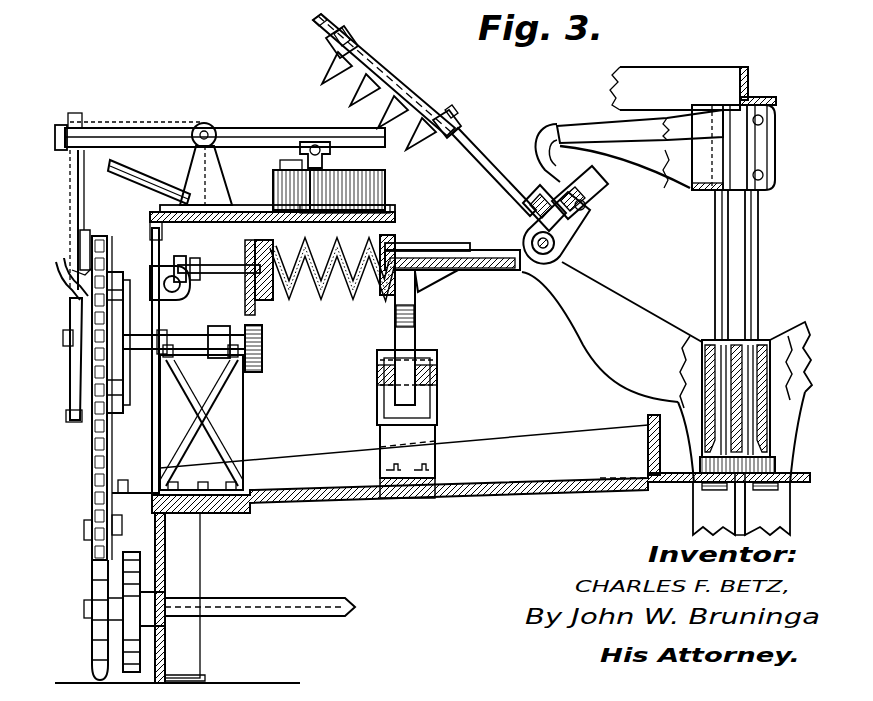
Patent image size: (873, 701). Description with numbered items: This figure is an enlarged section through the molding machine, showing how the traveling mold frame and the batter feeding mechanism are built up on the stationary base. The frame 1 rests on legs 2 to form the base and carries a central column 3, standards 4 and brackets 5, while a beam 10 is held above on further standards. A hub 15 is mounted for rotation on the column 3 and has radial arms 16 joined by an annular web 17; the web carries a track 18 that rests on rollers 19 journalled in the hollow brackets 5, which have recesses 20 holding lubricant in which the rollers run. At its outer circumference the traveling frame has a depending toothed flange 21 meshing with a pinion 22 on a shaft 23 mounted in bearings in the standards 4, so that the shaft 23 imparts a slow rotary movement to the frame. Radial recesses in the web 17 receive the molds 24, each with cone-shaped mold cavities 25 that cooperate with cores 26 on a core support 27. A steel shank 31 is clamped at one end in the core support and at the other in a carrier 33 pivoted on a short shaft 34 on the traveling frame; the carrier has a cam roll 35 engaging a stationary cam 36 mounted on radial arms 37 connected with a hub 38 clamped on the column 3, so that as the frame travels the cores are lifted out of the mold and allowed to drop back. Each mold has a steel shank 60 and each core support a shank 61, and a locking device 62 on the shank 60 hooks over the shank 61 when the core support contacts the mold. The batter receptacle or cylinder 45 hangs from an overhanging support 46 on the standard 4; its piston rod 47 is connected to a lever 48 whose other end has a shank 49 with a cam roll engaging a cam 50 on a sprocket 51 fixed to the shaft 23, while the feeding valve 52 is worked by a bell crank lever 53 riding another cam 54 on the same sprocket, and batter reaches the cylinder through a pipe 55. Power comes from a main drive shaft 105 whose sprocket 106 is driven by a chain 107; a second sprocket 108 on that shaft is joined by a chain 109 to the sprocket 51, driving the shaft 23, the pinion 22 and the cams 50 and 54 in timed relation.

The frame 1 is at (498, 492).
The legs 2 is at (190, 564).
The central column 3 is at (759, 228).
The standards 4 is at (152, 440).
The brackets 5 is at (380, 458).
The beam 10 is at (680, 72).
The hub 15 is at (760, 345).
The radial arms 16 is at (600, 374).
The annular web 17 is at (472, 258).
The track 18 is at (422, 290).
The rollers 19 is at (400, 330).
The recesses 20 is at (430, 398).
The depending toothed flange 21 is at (275, 302).
The pinion 22 is at (262, 346).
The shaft 23 is at (185, 349).
The molds 24 is at (400, 252).
The cone-shaped mold cavities 25 is at (392, 240).
The cores 26 is at (345, 95).
The core support 27 is at (395, 92).
The steel shank 31 is at (478, 147).
The carrier 33 is at (552, 196).
The short shaft 34 is at (556, 248).
The cam roll 35 is at (610, 196).
The cam 36 is at (560, 152).
The radial arms 37 is at (576, 124).
The hub 38 is at (700, 190).
The receptacle or cylinder 45 is at (275, 180).
The overhanging support 46 is at (200, 214).
The piston rod 47 is at (332, 156).
The lever 48 is at (252, 128).
The shank 49 is at (72, 190).
The cam 50 is at (66, 292).
The sprocket 51 is at (90, 236).
The feeding valve 52 is at (385, 192).
The bell crank lever 53 is at (165, 226).
The cam 54 is at (80, 425).
The pipe 55 is at (150, 181).
The steel shank 60 is at (204, 273).
The steel shank 61 is at (312, 22).
The locking device 62 is at (178, 300).
The main drive shaft 105 is at (290, 617).
The sprocket 106 is at (140, 556).
The chain 107 is at (145, 648).
The sprocket 108 is at (96, 656).
The chain 109 is at (94, 562).